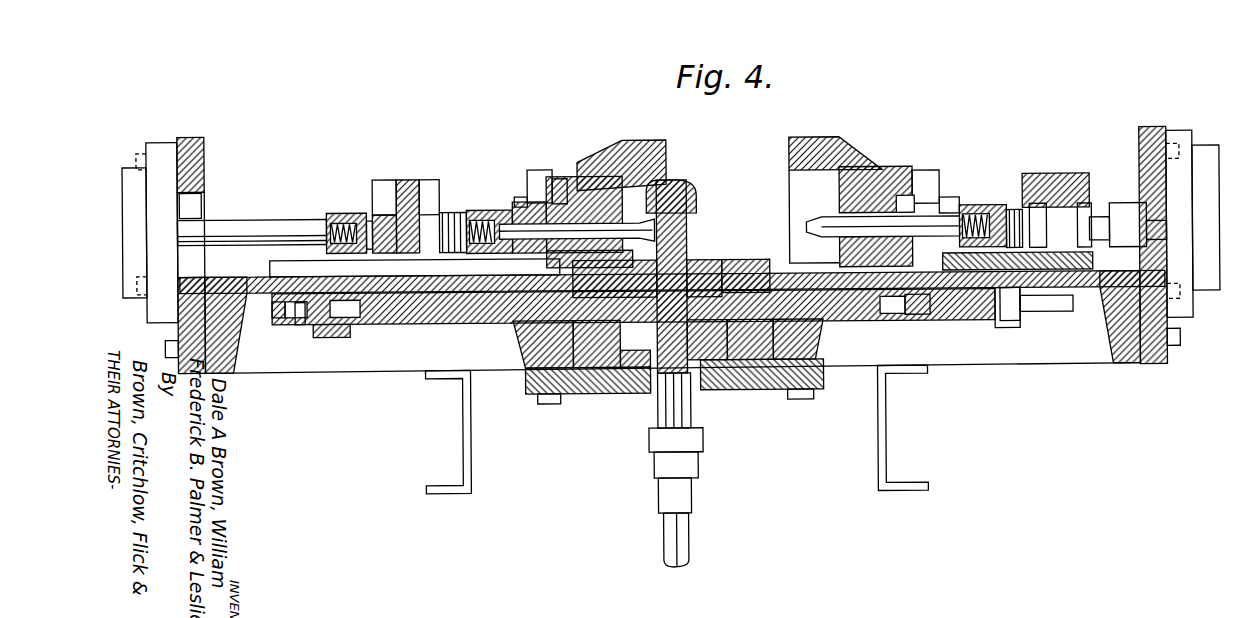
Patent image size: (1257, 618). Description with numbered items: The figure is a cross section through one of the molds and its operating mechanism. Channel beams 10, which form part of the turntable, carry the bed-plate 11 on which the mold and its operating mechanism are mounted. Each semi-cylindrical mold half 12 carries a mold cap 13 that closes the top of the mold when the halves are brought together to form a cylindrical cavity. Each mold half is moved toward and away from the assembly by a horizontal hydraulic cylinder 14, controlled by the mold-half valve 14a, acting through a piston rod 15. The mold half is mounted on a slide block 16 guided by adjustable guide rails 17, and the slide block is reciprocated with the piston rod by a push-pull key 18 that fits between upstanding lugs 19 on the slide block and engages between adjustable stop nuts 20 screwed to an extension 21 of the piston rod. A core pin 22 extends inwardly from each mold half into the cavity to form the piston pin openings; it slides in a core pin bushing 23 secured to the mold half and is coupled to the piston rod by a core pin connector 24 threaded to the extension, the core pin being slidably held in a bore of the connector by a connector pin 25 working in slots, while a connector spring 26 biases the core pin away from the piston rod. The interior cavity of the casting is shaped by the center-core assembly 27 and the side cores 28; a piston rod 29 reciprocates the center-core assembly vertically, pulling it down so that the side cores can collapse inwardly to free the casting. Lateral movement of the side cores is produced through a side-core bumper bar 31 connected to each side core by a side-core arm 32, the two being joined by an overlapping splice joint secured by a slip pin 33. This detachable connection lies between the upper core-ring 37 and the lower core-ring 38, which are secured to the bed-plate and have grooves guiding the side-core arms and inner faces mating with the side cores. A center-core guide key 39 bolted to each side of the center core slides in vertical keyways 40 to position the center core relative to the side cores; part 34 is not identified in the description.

The channel beams 10 is at (885, 440).
The bed-plate 11 is at (283, 274).
The mold half 12 is at (556, 169).
The mold cap 13 is at (632, 145).
The hydraulic cylinder 14 is at (128, 190).
The mold-half valve 14a is at (1160, 362).
The piston rod 15 is at (228, 222).
The slide block 16 is at (540, 176).
The adjustable guide rails 17 is at (1115, 345).
The push-pull key 18 is at (440, 213).
The upstanding lugs 19 is at (390, 178).
The adjustable stop nuts 20 is at (368, 218).
The extension 21 is at (352, 211).
The core pin 22 is at (590, 222).
The core pin bushing 23 is at (937, 199).
The core pin connector 24 is at (488, 203).
The connector pin 25 is at (523, 201).
The connector spring 26 is at (518, 199).
The center-core assembly 27 is at (680, 178).
The side cores 28 is at (697, 198).
The piston rod 29 is at (688, 538).
The side-core bumper bar 31 is at (352, 340).
The side-core arm 32 is at (575, 365).
The slip pin 33 is at (780, 268).
The plate 34 is at (385, 337).
The upper core-ring 37 is at (600, 350).
The lower core-ring 38 is at (625, 368).
The center-core guide key 39 is at (700, 365).
The vertical keyways 40 is at (700, 262).